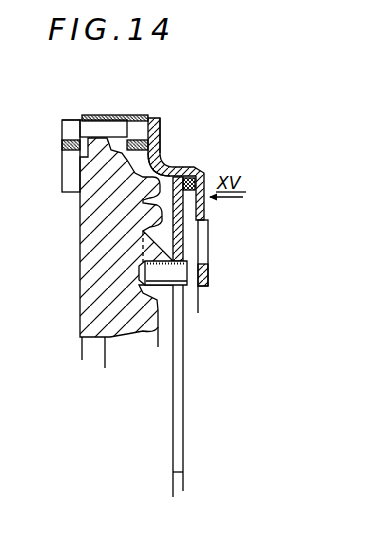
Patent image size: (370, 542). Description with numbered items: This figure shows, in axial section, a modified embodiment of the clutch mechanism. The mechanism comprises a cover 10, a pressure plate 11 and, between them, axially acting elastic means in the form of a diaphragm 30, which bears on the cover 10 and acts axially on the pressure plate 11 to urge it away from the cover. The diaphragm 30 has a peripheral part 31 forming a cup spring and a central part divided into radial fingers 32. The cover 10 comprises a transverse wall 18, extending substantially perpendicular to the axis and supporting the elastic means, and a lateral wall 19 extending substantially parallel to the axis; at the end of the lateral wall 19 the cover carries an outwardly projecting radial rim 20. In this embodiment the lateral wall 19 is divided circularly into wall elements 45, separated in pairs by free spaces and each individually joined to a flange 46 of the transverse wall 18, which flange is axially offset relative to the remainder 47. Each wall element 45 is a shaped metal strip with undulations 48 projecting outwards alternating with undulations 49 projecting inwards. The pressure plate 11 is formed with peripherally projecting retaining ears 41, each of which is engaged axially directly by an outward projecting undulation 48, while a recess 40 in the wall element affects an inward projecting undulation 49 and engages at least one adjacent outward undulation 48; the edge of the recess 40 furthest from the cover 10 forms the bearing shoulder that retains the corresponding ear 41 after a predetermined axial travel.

The cover 10 is at (198, 142).
The pressure plate 11 is at (127, 345).
The transverse wall 18 is at (206, 184).
The lateral wall 19 is at (71, 114).
The radial rim 20 is at (151, 121).
The diaphragm 30 is at (189, 437).
The peripheral part 31 is at (186, 230).
The radial fingers 32 is at (176, 458).
The recess 40 is at (79, 143).
The retaining ear 41 is at (100, 140).
The wall element 45 is at (62, 196).
The flange 46 is at (160, 132).
The remainder 47 is at (209, 285).
The outward projecting undulations 48 is at (97, 119).
The inward projecting undulations 49 is at (134, 140).